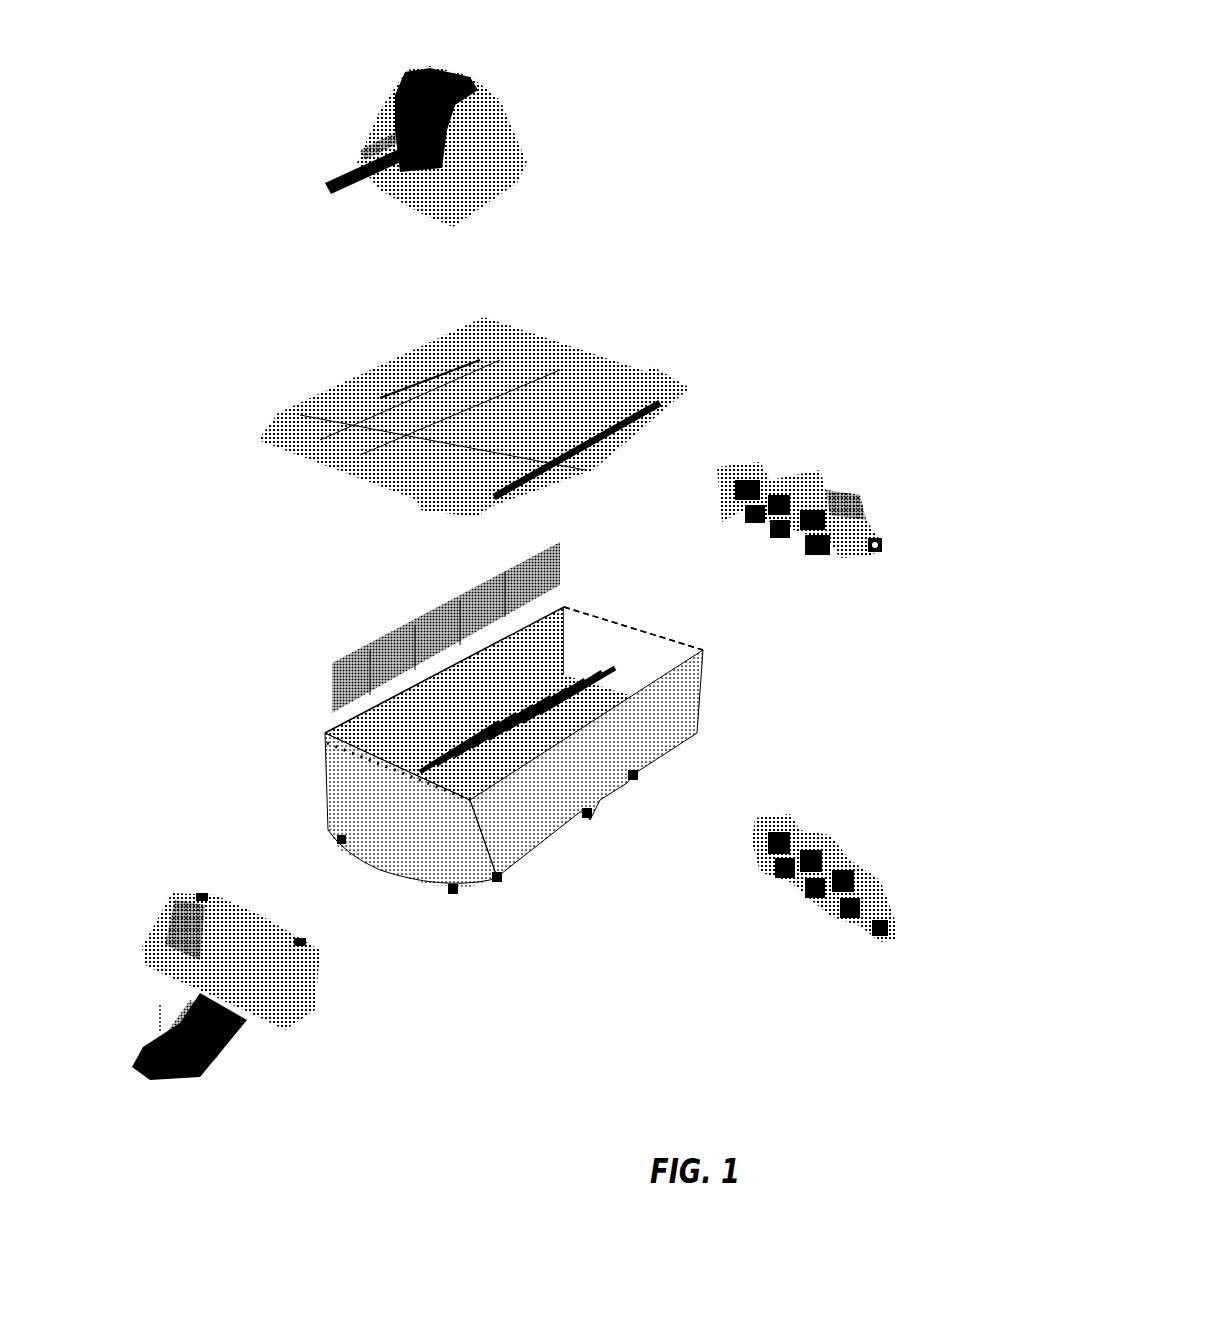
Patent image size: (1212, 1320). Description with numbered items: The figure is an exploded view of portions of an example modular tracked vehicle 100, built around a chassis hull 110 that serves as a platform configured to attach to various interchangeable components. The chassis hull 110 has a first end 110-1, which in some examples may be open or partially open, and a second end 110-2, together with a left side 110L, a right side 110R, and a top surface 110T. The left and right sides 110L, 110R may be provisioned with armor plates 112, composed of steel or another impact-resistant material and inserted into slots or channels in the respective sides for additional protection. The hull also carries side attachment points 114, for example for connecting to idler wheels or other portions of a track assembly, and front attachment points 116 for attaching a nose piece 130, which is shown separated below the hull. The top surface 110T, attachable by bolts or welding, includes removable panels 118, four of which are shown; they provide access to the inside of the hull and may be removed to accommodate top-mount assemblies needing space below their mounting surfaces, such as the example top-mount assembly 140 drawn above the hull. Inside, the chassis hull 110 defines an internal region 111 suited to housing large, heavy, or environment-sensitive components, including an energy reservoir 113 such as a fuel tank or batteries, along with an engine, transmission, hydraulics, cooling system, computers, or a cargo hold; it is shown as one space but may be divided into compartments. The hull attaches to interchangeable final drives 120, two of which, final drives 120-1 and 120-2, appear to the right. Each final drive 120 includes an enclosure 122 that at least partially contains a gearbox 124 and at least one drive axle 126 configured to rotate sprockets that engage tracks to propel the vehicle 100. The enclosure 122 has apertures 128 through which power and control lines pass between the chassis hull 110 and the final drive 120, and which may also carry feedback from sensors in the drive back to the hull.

The modular tracked vehicle 100 is at (806, 186).
The chassis hull 110 is at (404, 747).
The top surface 110T is at (474, 417).
The left side 110L is at (444, 686).
The right side 110R is at (586, 763).
The first end 110-1 is at (633, 651).
The second end 110-2 is at (411, 810).
The internal region 111 is at (576, 631).
The armor plates 112 is at (384, 611).
The energy reservoir 113 is at (317, 765).
The side attachment points 114 is at (627, 790).
The front attachment points 116 is at (436, 903).
The removable panels 118 is at (381, 400).
The final drive 120 is at (778, 797).
The first final drive 120-1 is at (864, 579).
The second final drive 120-2 is at (813, 942).
The enclosure 122 is at (863, 513).
The gearbox 124 is at (856, 580).
The drive axle 126 is at (882, 546).
The apertures 128 is at (771, 512).
The nose piece 130 is at (286, 1058).
The top-mount assembly 140 is at (541, 96).